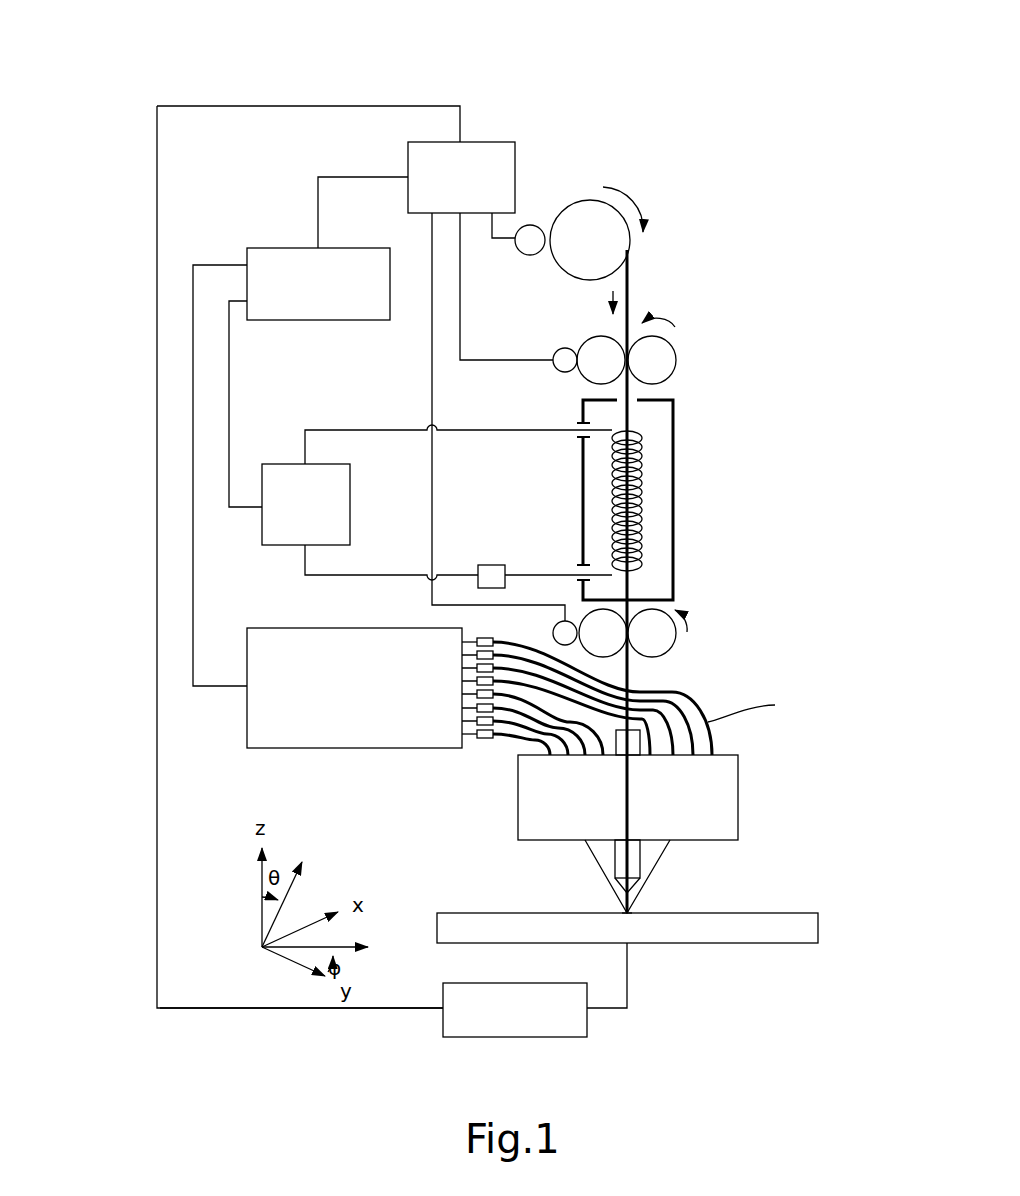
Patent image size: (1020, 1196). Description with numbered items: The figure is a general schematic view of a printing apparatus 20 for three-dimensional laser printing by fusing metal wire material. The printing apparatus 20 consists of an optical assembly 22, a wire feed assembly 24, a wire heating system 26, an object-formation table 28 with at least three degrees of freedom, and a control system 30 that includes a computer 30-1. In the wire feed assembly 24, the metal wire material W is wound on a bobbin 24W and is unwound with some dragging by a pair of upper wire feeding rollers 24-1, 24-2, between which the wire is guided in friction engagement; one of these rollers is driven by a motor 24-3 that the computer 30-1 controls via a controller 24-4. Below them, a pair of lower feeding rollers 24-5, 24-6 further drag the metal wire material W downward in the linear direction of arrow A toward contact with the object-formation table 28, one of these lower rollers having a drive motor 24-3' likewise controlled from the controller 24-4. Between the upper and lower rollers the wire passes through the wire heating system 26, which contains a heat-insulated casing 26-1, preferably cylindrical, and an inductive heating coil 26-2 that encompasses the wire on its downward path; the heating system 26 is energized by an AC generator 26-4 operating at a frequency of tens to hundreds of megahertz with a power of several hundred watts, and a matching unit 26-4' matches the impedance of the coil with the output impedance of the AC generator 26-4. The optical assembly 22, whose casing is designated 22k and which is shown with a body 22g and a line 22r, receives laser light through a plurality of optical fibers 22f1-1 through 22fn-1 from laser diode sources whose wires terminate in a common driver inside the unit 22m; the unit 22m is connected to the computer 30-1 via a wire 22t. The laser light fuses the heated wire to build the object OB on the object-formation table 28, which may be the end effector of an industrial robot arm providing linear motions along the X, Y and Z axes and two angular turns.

The printing apparatus 20 is at (690, 190).
The control system 30 is at (245, 321).
The computer 30-1 is at (292, 265).
The wire 22t is at (193, 290).
The controller 24-4 is at (490, 160).
The bobbin 24W is at (592, 190).
The metal wire material W is at (630, 273).
The arrow A is at (599, 309).
The wire feed assembly 24 is at (666, 288).
The upper wire feeding roller 24-1 is at (604, 346).
The upper wire feeding roller 24-2 is at (666, 360).
The motor 24-3 is at (532, 334).
The wire heating system 26 is at (708, 500).
The heat-insulated casing 26-1 is at (673, 508).
The inductive heating coil 26-2 is at (640, 533).
The AC generator 26-4 is at (437, 474).
The matching unit 26-4' is at (513, 532).
The drive motor 24-3' is at (532, 576).
The lower feeding roller 24-5 is at (668, 633).
The lower feeding roller 24-6 is at (605, 645).
The unit 22m is at (333, 752).
The optical fiber 22fn-1 is at (477, 642).
The optical fiber 22f1-1 is at (478, 738).
The optical assembly 22 is at (675, 821).
The head body 22g is at (727, 780).
The casing 22k is at (630, 862).
The object OB is at (627, 913).
The object-formation table 28 is at (650, 1017).
The signal line 22r is at (345, 1010).